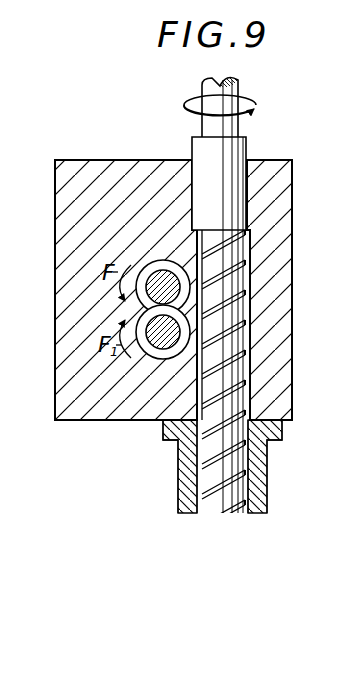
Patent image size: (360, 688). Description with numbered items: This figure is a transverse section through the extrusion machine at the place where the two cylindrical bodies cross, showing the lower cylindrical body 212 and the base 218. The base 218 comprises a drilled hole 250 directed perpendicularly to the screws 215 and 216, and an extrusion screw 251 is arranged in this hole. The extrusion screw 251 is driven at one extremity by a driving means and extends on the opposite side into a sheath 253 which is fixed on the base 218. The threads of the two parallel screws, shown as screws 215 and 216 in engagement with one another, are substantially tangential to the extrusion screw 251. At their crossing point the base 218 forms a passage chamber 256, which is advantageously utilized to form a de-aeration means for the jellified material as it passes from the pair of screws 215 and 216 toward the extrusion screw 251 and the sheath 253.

The cylindrical body 212 is at (176, 487).
The thread 215 is at (160, 276).
The thread 216 is at (162, 350).
The base 218 is at (275, 388).
The drilled hole 250 is at (246, 289).
The extrusion screw 251 is at (232, 258).
The sheath 253 is at (267, 470).
The passage chamber 256 is at (197, 306).